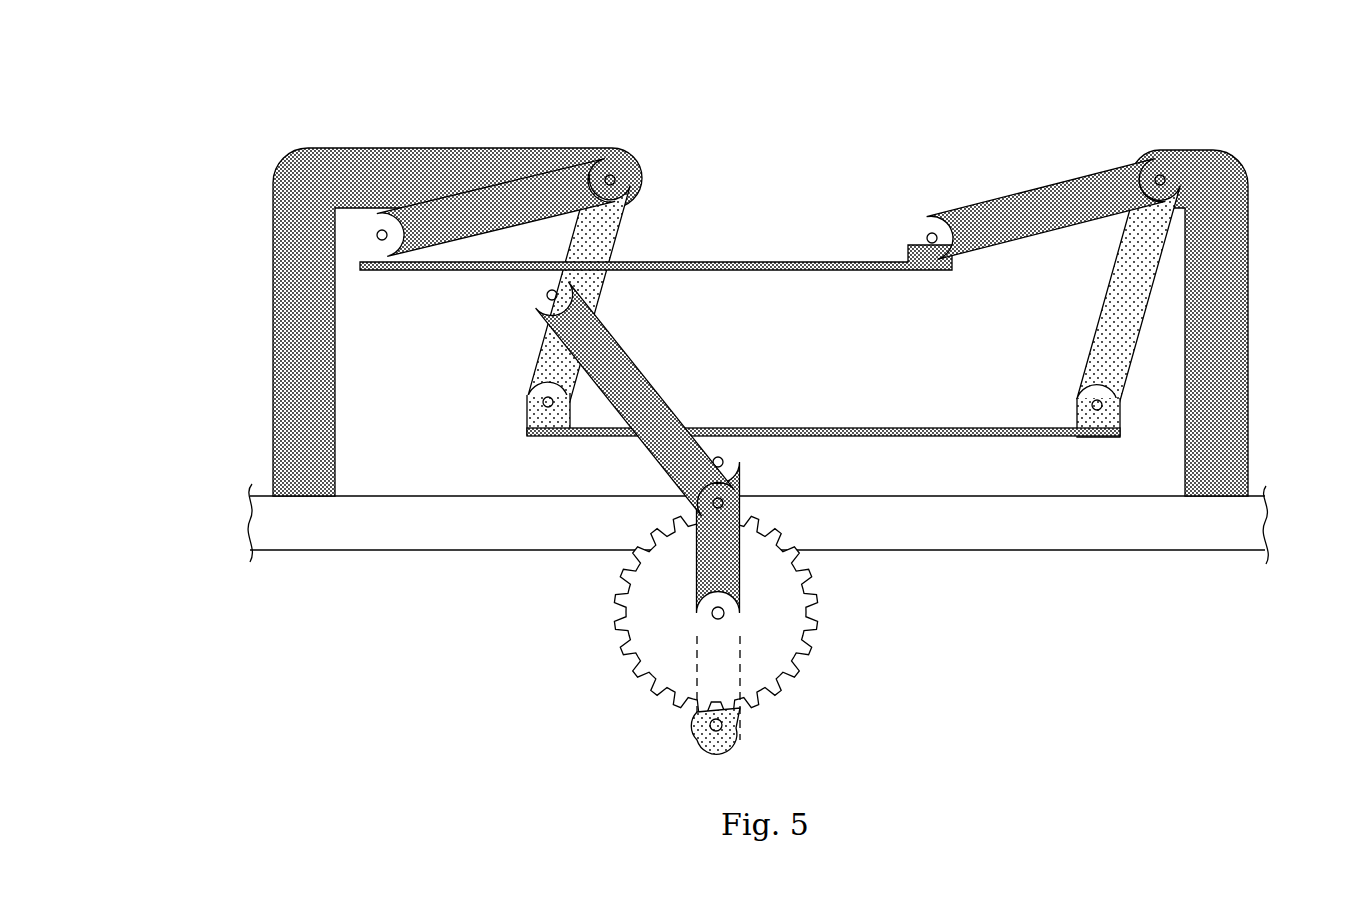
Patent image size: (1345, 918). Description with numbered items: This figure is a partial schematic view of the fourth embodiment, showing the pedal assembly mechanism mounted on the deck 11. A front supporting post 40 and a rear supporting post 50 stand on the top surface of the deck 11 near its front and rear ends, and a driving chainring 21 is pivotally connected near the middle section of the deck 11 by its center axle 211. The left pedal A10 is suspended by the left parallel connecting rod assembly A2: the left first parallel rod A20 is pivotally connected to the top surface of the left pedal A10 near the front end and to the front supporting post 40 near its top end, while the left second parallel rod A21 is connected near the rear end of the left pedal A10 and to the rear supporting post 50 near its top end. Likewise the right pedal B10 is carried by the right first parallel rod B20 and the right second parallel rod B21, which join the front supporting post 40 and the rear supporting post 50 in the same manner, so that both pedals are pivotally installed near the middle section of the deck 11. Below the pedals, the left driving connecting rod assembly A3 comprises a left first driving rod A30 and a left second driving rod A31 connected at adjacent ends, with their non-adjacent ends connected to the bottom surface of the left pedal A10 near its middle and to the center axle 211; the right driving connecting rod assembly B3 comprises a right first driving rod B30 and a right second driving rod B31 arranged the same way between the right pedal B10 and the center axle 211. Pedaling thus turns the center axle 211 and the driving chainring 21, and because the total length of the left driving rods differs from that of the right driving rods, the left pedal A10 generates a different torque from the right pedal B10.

The deck 11 is at (412, 535).
The driving chainring 21 is at (778, 665).
The center axle 211 is at (723, 613).
The front supporting post 40 is at (277, 338).
The rear supporting post 50 is at (1240, 347).
The left pedal A10 is at (721, 262).
The left parallel connecting rod assembly A2 is at (771, 145).
The left first parallel rod A20 is at (500, 210).
The left second parallel rod A21 is at (1046, 196).
The left driving connecting rod assembly A3 is at (591, 476).
The left first driving rod A30 is at (646, 377).
The left second driving rod A31 is at (698, 578).
The right pedal B10 is at (877, 428).
The right first parallel rod B20 is at (538, 360).
The right second parallel rod B21 is at (1105, 331).
The right driving connecting rod assembly B3 is at (883, 605).
The right first driving rod B30 is at (742, 484).
The right second driving rod B31 is at (743, 723).